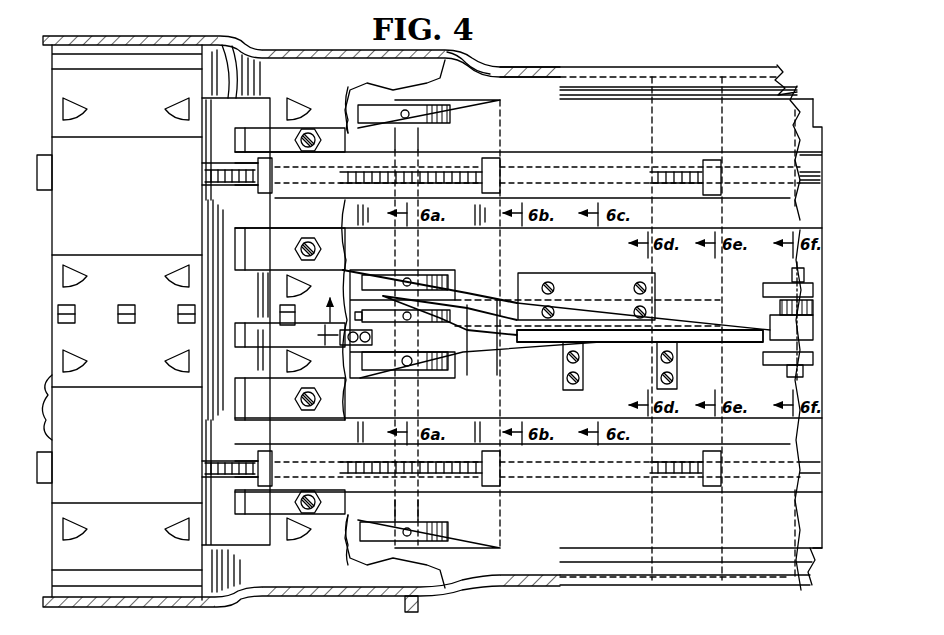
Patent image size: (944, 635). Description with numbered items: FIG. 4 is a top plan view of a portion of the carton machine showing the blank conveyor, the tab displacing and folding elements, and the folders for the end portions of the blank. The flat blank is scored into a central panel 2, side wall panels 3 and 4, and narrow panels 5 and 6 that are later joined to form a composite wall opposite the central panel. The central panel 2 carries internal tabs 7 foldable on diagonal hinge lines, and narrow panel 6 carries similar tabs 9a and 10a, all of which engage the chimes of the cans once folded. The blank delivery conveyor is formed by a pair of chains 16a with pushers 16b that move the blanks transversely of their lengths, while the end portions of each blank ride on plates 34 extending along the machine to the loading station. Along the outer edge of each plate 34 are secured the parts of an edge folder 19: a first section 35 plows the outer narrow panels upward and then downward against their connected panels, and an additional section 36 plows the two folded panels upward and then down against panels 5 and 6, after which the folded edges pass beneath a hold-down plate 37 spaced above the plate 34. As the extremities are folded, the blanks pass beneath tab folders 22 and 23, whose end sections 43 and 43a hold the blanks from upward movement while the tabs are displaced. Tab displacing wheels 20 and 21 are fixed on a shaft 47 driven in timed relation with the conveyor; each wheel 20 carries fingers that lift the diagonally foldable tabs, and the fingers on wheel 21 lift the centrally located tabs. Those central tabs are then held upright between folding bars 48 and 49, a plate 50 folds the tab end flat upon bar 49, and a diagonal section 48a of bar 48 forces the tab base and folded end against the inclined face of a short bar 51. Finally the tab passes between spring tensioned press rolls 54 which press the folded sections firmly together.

The central panel 2 is at (132, 364).
The side wall panel 3 is at (132, 450).
The side wall panel 4 is at (132, 208).
The narrow panel 5 is at (132, 537).
The narrow panel 6 is at (132, 110).
The internal tab 7 is at (305, 362).
The tab 9a is at (75, 112).
The tab 10a is at (180, 108).
The chain 16a is at (222, 167).
The pusher 16b is at (220, 187).
The edge folder 19 is at (278, 46).
The tab displacing wheel 20 is at (372, 280).
The tab displacing wheel 21 is at (373, 313).
The tab folding member 22 is at (517, 98).
The tab folding member 23 is at (507, 333).
The plate 34 is at (230, 65).
The first section 35 is at (229, 60).
The additional section 36 is at (467, 56).
The hold-down plate 37 is at (680, 75).
The end section 43 is at (292, 238).
The end section 43a is at (357, 140).
The shaft 47 is at (400, 604).
The folding bar 48 is at (478, 312).
The diagonal section 48a is at (692, 325).
The folding bar 49 is at (541, 345).
The plate 50 is at (576, 285).
The short bar 51 is at (693, 346).
The press roll 54 is at (770, 326).